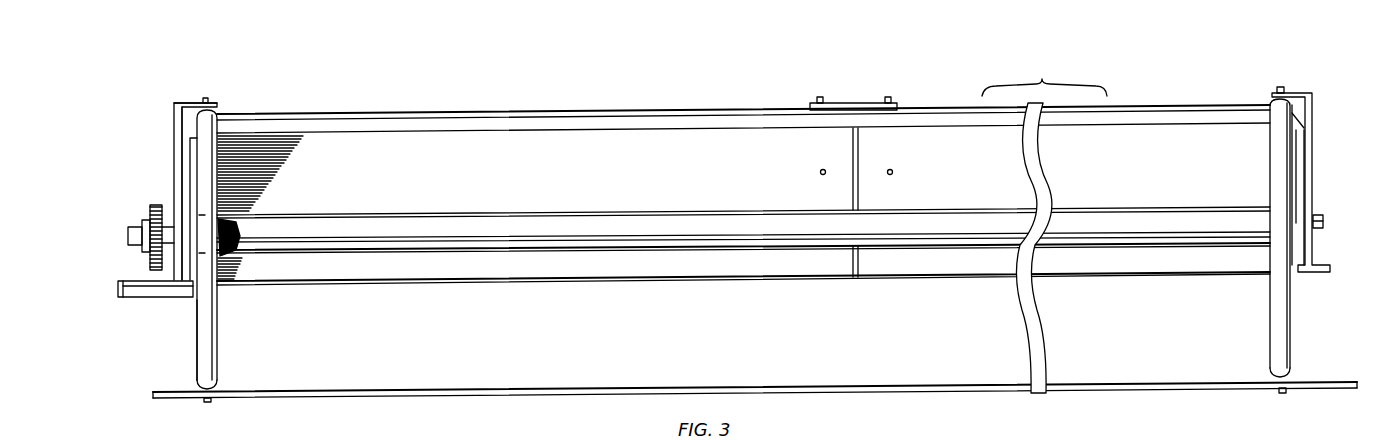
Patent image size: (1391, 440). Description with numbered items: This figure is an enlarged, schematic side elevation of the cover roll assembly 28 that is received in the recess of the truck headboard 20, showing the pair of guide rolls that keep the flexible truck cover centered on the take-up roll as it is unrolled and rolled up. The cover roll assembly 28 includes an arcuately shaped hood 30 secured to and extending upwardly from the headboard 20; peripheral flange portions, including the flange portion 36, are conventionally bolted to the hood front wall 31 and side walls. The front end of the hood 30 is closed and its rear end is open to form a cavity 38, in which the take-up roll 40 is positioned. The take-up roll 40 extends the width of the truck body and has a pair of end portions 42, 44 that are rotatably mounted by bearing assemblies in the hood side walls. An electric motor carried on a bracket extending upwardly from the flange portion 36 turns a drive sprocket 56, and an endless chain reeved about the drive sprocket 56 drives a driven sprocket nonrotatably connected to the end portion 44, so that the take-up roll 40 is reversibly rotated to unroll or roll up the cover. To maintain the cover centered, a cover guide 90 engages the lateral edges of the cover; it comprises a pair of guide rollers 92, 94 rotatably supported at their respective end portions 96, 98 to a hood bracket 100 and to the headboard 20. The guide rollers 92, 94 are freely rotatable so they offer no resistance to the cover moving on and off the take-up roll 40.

The headboard 20 is at (187, 400).
The cover roll assembly 28 is at (856, 95).
The hood 30 is at (752, 108).
The hood front wall 31 is at (957, 174).
The flange portion 36 is at (118, 288).
The cavity 38 is at (362, 132).
The take-up roll 40 is at (750, 218).
The end portion 42 is at (1321, 216).
The end portion 44 is at (172, 217).
The drive sprocket 56 is at (152, 210).
The cover guide 90 is at (178, 114).
The guide roller 92 is at (1285, 283).
The guide roller 94 is at (202, 322).
The end portion 96 is at (213, 128).
The end portion 98 is at (200, 383).
The hood bracket 100 is at (192, 102).